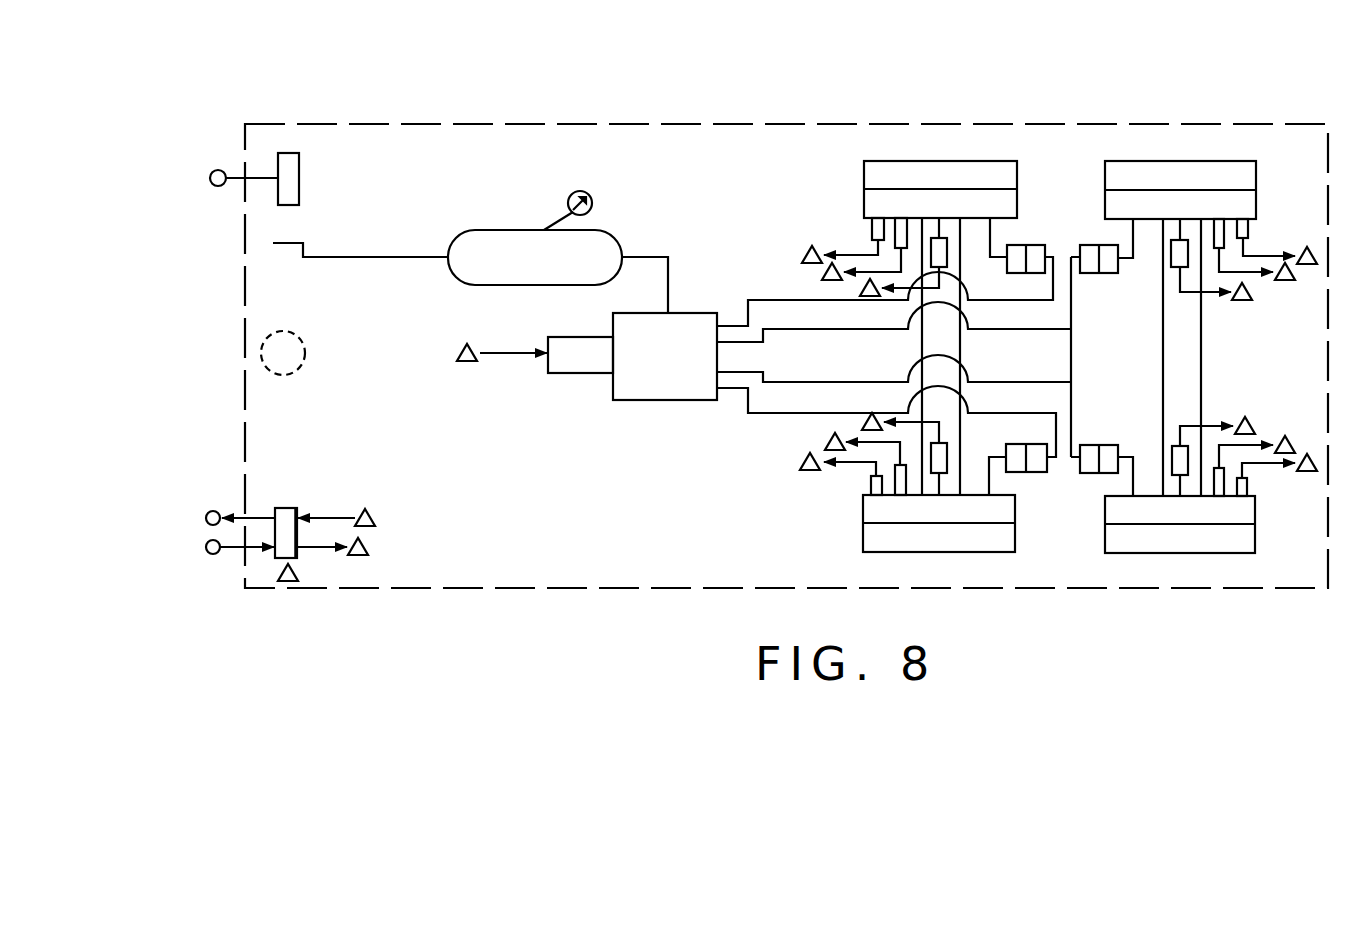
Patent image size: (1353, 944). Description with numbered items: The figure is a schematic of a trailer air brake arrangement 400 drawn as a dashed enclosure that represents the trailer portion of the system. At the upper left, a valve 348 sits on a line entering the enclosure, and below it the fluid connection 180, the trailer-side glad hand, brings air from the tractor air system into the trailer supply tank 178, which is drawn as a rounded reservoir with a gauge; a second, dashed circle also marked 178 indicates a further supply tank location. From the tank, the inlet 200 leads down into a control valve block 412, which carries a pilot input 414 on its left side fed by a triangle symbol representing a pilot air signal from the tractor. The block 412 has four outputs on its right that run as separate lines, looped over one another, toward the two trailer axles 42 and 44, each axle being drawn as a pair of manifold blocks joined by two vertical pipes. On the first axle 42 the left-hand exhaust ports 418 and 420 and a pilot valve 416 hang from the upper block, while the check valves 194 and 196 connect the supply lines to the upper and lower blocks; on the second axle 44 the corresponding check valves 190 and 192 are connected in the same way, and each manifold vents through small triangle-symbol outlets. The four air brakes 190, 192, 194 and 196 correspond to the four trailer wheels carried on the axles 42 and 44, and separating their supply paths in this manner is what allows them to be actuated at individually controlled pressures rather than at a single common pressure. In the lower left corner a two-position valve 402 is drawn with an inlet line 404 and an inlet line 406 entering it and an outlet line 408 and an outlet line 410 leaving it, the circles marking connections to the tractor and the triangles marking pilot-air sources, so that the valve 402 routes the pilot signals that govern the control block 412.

The pneumatic control system 400 is at (821, 101).
The shut-off valve 348 is at (290, 176).
The fluid connection 180 is at (283, 242).
The supply tank 178 is at (520, 245).
The inlet 200 is at (650, 258).
The pilot input port 414 is at (578, 368).
The control valve block 412 is at (678, 378).
The exhaust port 418 is at (870, 228).
The exhaust port 420 is at (902, 240).
The pilot valve 416 is at (940, 245).
The air brake 194 is at (1036, 246).
The air brake 190 is at (1108, 275).
The trailer axle 42 is at (933, 342).
The trailer axle 44 is at (1198, 357).
The air brake 192 is at (1093, 445).
The air brake 196 is at (1037, 473).
The outlet line 408 is at (258, 516).
The inlet line 404 is at (340, 518).
The outlet line 410 is at (318, 550).
The inlet line 406 is at (262, 550).
The two-position valve 402 is at (285, 581).